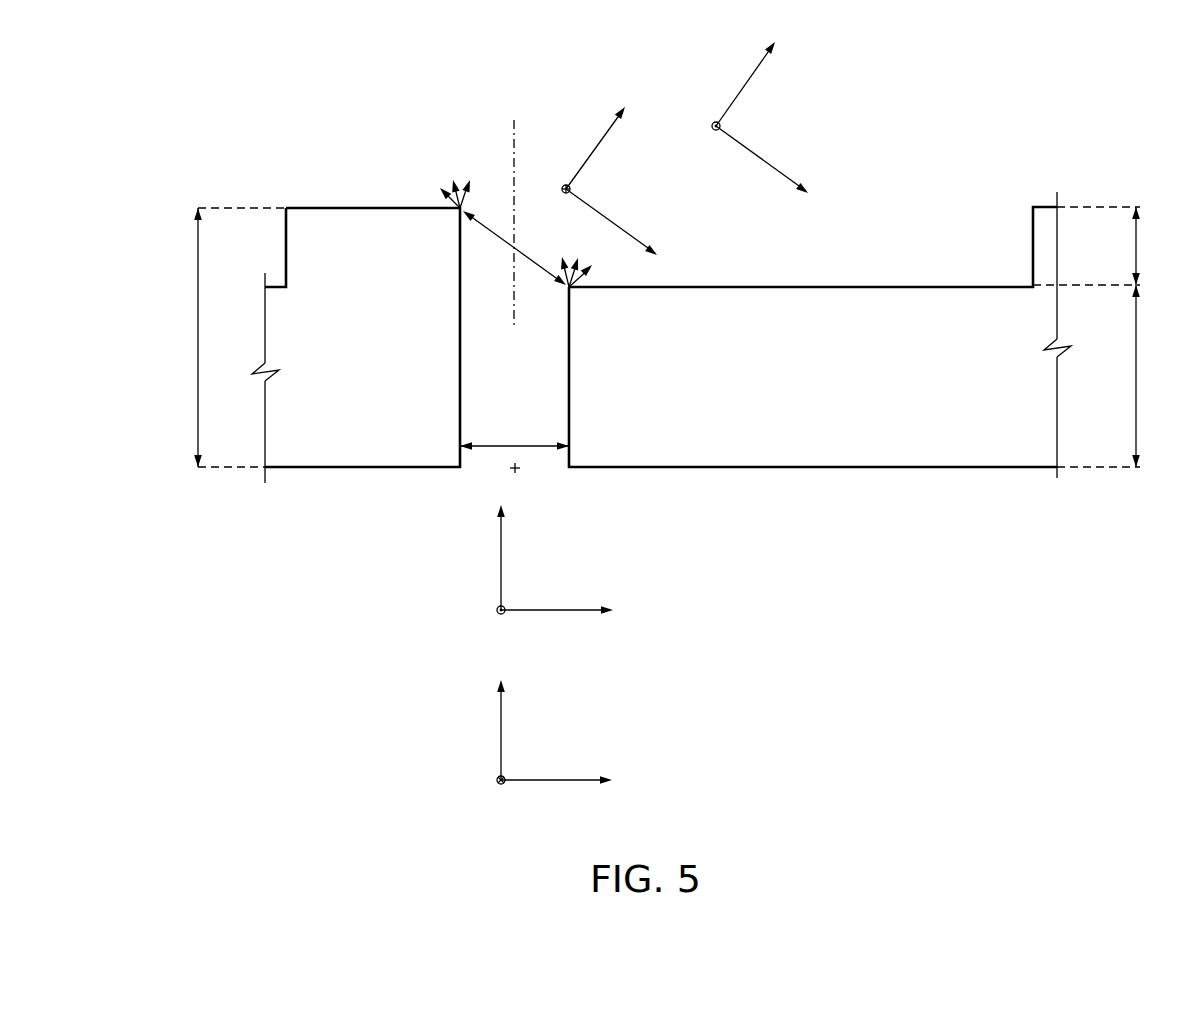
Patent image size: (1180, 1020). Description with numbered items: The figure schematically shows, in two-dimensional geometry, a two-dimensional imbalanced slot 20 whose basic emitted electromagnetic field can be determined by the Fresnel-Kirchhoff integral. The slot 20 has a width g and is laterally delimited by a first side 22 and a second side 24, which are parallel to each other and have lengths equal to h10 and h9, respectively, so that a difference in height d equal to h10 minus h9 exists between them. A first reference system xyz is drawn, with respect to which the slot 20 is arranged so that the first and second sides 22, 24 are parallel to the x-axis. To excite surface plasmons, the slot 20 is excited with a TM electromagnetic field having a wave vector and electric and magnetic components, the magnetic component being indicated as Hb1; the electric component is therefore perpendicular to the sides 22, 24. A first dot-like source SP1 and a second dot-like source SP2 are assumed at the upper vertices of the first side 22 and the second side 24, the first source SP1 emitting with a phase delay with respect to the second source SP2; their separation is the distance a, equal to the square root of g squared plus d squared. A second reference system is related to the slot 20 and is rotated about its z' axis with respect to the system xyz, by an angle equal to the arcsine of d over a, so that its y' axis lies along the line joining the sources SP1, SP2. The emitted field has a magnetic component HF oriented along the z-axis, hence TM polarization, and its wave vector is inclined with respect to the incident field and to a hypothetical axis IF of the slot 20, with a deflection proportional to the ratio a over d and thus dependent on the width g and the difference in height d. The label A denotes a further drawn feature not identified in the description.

The two-dimensional imbalanced slot 20 is at (523, 383).
The first side 22 is at (456, 360).
The second side 24 is at (575, 403).
The first dot-like source SP1 is at (458, 211).
The second dot-like source SP2 is at (571, 289).
The distance between the first and second dot-like sources a is at (514, 248).
The width g is at (514, 433).
The axis A is at (515, 468).
The hypothetical axis of the two-dimensional imbalanced slot IF is at (513, 163).
The length of the first side h10 is at (222, 337).
The length of the second side h9 is at (1113, 376).
The difference in height d is at (1097, 246).
The z' axis of the second reference system z' is at (608, 167).
The magnetic component of the emitted electromagnetic field HF is at (756, 109).
The magnetic component of the exciting electromagnetic field Hb1 is at (552, 574).
The first reference system xyz is at (549, 744).